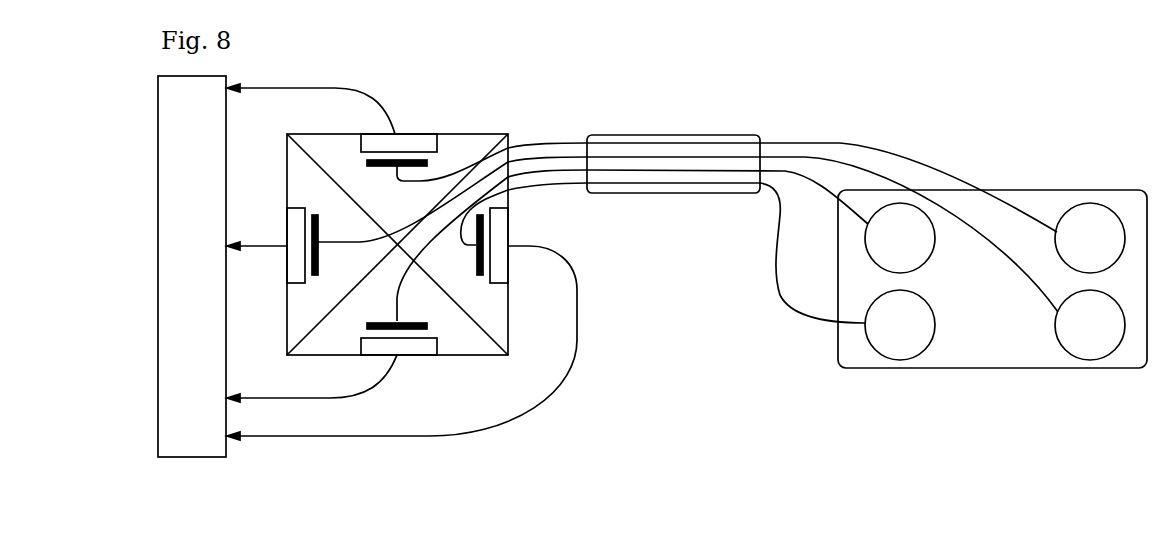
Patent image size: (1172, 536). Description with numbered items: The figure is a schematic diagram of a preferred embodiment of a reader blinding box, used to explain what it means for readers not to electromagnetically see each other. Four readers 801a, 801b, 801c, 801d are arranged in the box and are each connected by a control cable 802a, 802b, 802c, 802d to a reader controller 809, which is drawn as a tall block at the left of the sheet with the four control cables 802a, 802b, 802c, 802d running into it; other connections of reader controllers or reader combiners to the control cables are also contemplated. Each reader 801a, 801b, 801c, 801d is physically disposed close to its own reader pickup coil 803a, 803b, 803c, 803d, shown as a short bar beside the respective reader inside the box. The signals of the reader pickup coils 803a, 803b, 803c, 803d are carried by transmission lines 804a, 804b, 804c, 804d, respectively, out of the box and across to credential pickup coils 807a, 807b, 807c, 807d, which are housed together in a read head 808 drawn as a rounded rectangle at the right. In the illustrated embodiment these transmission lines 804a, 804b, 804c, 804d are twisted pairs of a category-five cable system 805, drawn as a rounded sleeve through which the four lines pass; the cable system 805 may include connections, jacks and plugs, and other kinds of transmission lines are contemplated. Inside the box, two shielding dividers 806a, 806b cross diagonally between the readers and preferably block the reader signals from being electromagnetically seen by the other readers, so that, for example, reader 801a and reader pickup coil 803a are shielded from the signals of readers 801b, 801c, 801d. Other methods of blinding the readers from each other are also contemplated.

The reader 801a is at (353, 145).
The reader 801b is at (295, 288).
The reader 801c is at (345, 358).
The reader 801d is at (504, 291).
The control cable 802a is at (304, 86).
The control cable 802b is at (272, 273).
The control cable 802c is at (333, 400).
The control cable 802d is at (560, 385).
The reader pickup coil 803a is at (436, 164).
The reader pickup coil 803b is at (315, 210).
The reader pickup coil 803c is at (434, 327).
The reader pickup coil 803d is at (480, 280).
The transmission line 804a is at (535, 141).
The transmission line 804b is at (343, 236).
The transmission line 804c is at (412, 283).
The transmission line 804d is at (517, 195).
The CAT-5 cable system 805 is at (682, 140).
The shielding divider 806a is at (303, 141).
The shielding divider 806b is at (314, 323).
The credential pickup coil 807a is at (1090, 201).
The credential pickup coil 807b is at (1076, 359).
The credential pickup coil 807c is at (869, 262).
The credential pickup coil 807d is at (925, 358).
The read head 808 is at (858, 373).
The reader controller 809 is at (194, 463).